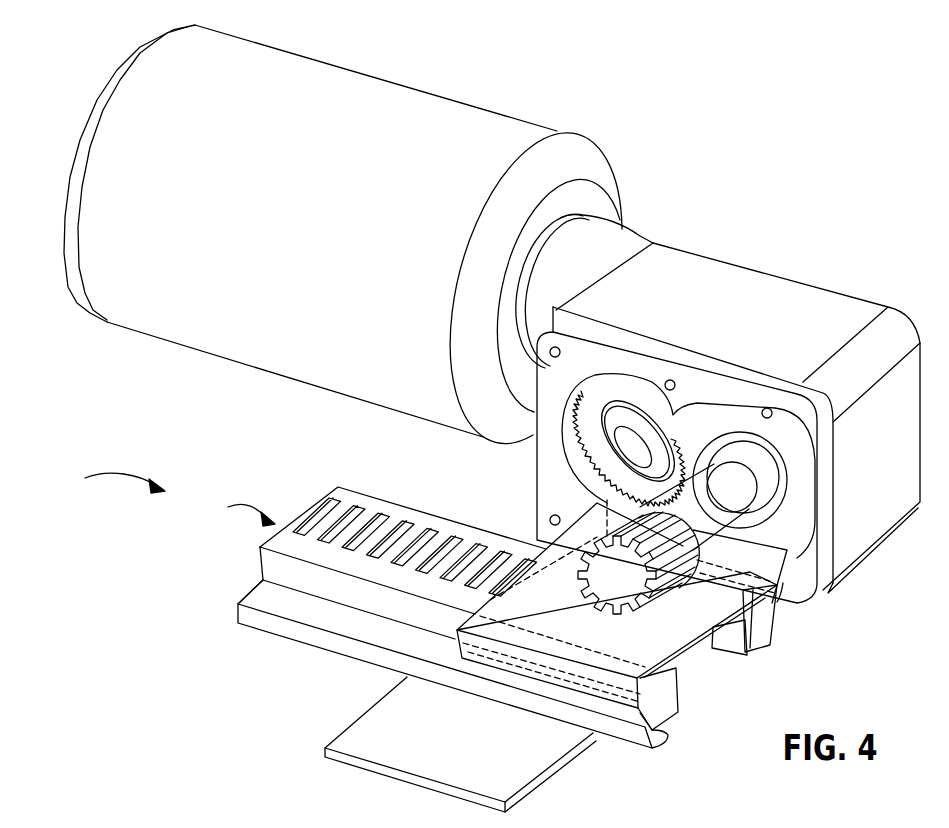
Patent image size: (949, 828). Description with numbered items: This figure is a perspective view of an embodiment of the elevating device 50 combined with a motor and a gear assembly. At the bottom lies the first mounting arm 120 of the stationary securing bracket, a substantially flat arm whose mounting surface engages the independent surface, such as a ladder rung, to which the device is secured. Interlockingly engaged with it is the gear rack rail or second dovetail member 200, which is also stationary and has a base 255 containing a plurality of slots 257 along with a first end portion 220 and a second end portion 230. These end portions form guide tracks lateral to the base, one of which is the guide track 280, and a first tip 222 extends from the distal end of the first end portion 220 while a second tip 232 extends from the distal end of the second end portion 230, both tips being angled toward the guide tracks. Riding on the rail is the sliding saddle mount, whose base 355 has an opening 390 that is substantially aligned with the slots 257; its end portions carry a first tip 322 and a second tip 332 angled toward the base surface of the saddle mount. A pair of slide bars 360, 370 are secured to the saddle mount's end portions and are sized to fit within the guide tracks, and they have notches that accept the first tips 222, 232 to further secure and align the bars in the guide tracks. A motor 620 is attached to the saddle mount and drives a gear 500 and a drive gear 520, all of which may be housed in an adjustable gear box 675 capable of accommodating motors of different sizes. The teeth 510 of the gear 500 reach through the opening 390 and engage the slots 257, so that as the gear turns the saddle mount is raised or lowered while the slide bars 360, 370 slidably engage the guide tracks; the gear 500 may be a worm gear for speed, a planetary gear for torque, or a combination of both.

The elevating device 50 is at (108, 484).
The first mounting arm 120 is at (443, 762).
The second dovetail member 200 is at (232, 514).
The first end portion 220 is at (267, 633).
The first tip 222 is at (668, 733).
The second end portion 230 is at (727, 645).
The second tip 232 is at (775, 623).
The base 255 is at (393, 575).
The slots 257 is at (466, 525).
The guide track 280 is at (330, 615).
The first tip 322 is at (640, 740).
The second tip 332 is at (780, 603).
The base 355 is at (540, 607).
The slide bar 360 is at (662, 698).
The slide bar 370 is at (775, 632).
The opening 390 is at (622, 620).
The gear 500 is at (713, 388).
The gear teeth 510 is at (713, 491).
The drive gear 520 is at (612, 397).
The motor 620 is at (372, 93).
The gear box 675 is at (707, 322).